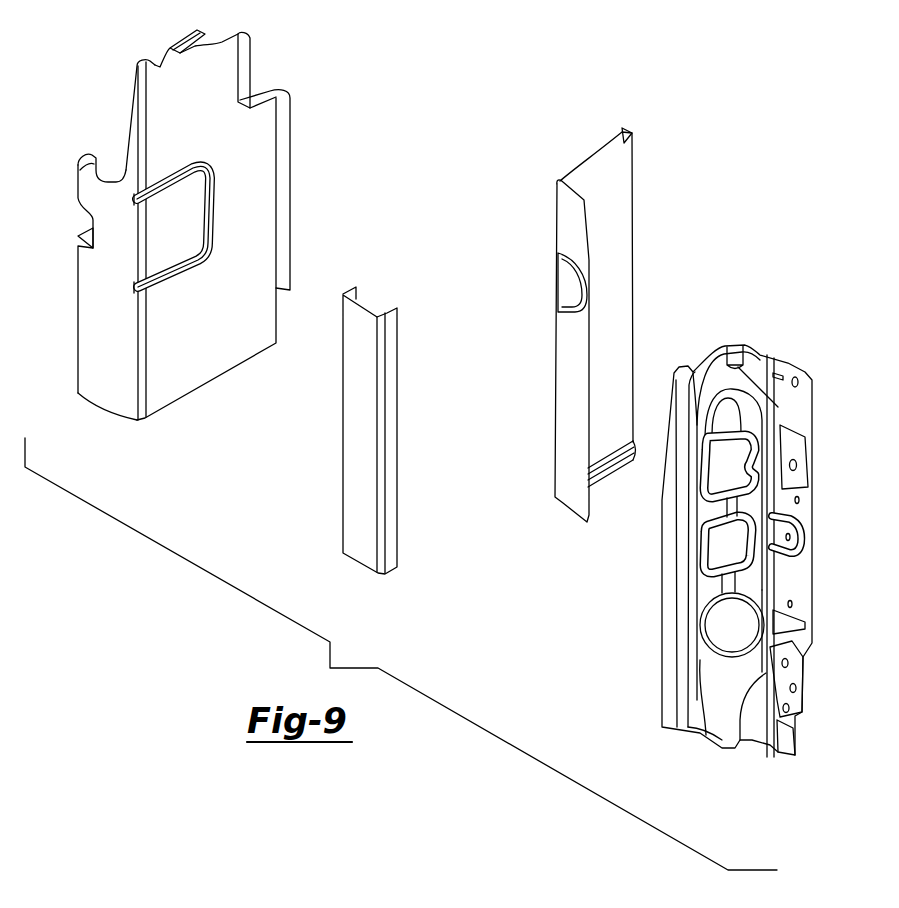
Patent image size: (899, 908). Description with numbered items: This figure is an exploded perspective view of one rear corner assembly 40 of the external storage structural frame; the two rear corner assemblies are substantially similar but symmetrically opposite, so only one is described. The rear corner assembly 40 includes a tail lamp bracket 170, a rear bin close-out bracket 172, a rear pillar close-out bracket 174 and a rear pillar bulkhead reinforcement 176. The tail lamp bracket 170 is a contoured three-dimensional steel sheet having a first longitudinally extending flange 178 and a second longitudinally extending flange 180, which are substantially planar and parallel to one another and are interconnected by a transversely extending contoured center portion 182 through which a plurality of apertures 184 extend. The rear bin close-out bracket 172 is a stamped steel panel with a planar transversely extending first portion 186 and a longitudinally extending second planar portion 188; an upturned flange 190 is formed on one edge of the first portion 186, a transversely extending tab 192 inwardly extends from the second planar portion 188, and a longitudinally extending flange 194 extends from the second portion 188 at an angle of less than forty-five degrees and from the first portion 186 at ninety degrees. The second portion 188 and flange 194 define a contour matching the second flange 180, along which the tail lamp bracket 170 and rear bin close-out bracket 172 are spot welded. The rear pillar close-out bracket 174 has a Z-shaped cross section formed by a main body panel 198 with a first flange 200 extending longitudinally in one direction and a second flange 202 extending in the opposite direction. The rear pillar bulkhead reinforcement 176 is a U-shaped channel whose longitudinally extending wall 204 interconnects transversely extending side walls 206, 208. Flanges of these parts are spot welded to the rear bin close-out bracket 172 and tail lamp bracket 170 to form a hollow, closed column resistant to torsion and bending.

The rear corner assembly 40 is at (403, 90).
The tail lamp bracket 170 is at (747, 713).
The rear bin close-out bracket 172 is at (78, 275).
The rear pillar close-out bracket 174 is at (600, 438).
The rear pillar bulkhead reinforcement 176 is at (350, 460).
The first longitudinally extending flange 178 is at (786, 589).
The second longitudinally extending flange 180 is at (683, 575).
The center portion 182 is at (740, 428).
The apertures 184 is at (749, 467).
The first portion 186 is at (197, 362).
The second planar portion 188 is at (97, 377).
The upturned flange 190 is at (268, 98).
The transversely extending tab 192 is at (93, 155).
The longitudinally extending flange 194 is at (140, 78).
The main body panel 198 is at (616, 202).
The first flange 200 is at (620, 131).
The second flange 202 is at (568, 237).
The longitudinally extending wall 204 is at (363, 303).
The side wall 206 is at (395, 457).
The side wall 208 is at (344, 292).